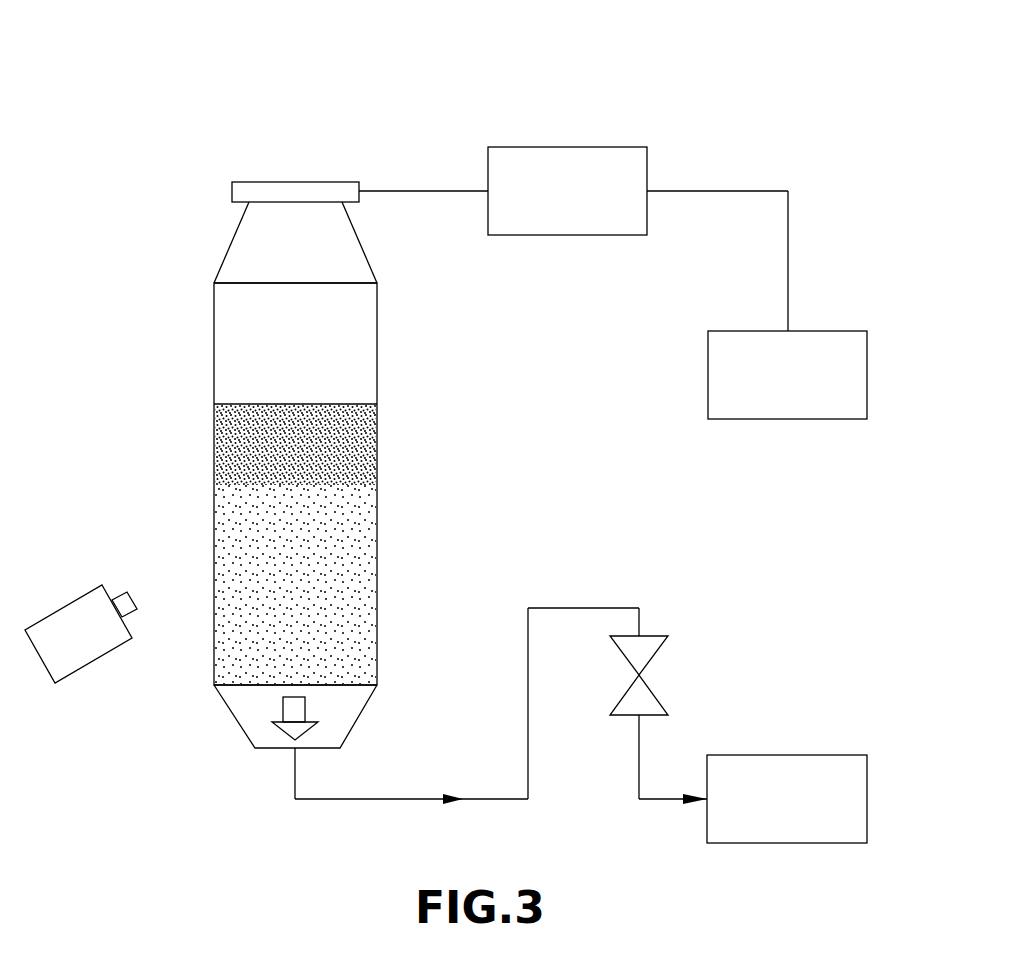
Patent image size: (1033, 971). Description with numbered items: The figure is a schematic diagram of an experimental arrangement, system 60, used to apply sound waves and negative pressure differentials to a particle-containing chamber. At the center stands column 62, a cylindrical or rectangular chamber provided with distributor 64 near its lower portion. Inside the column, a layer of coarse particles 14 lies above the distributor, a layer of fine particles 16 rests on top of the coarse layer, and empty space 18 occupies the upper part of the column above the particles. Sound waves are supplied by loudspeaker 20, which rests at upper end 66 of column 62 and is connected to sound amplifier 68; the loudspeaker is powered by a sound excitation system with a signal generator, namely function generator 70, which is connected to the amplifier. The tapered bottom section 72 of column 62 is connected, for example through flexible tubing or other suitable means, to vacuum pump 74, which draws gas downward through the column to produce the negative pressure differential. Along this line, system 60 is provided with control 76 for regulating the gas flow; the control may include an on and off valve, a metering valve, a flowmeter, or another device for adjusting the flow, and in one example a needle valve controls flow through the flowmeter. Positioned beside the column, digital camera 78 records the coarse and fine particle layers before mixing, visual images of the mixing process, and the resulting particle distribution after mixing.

The system 60 is at (775, 138).
The column 62 is at (196, 444).
The upper end 66 is at (214, 283).
The loudspeaker 20 is at (340, 241).
The empty space 18 is at (355, 357).
The fine particles 16 is at (358, 447).
The coarse particles 14 is at (350, 565).
The distributor 64 is at (230, 683).
The bottom section 72 is at (230, 712).
The sound amplifier 68 is at (563, 235).
The function generator 70 is at (826, 331).
The control 76 is at (652, 658).
The vacuum pump 74 is at (790, 755).
The digital camera 78 is at (70, 600).